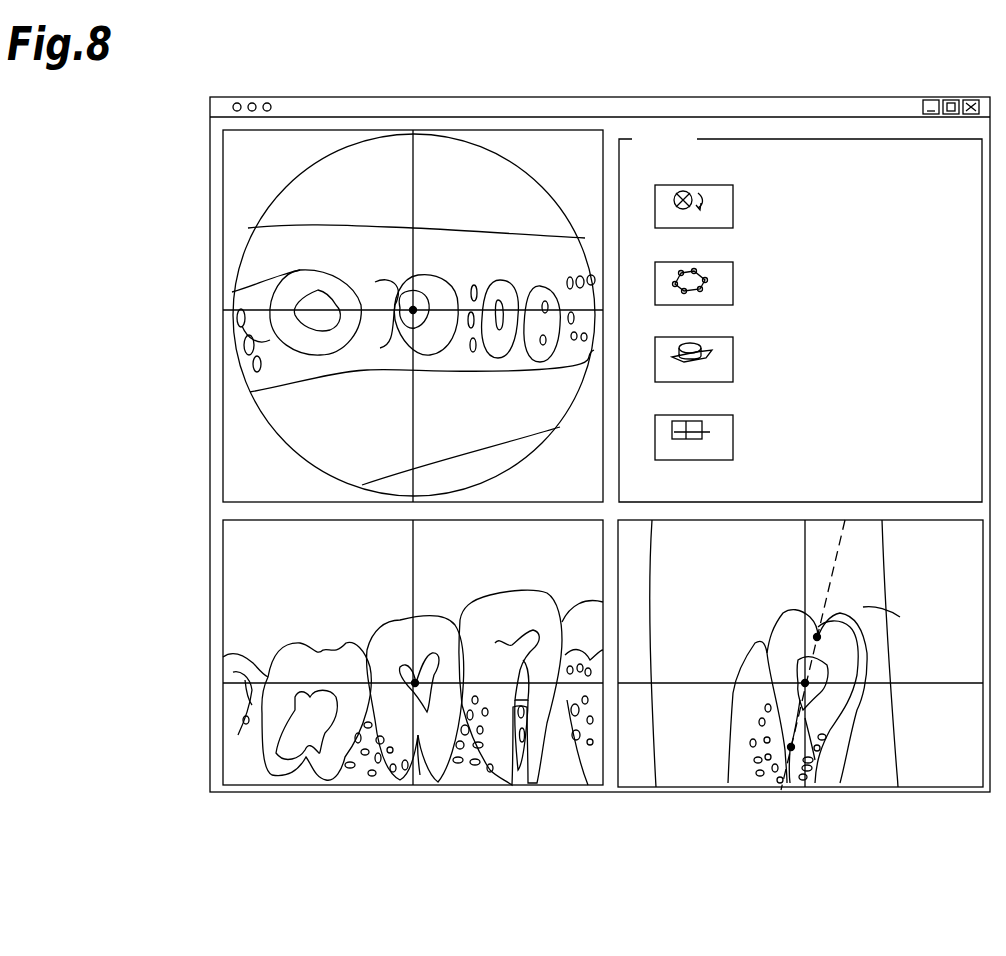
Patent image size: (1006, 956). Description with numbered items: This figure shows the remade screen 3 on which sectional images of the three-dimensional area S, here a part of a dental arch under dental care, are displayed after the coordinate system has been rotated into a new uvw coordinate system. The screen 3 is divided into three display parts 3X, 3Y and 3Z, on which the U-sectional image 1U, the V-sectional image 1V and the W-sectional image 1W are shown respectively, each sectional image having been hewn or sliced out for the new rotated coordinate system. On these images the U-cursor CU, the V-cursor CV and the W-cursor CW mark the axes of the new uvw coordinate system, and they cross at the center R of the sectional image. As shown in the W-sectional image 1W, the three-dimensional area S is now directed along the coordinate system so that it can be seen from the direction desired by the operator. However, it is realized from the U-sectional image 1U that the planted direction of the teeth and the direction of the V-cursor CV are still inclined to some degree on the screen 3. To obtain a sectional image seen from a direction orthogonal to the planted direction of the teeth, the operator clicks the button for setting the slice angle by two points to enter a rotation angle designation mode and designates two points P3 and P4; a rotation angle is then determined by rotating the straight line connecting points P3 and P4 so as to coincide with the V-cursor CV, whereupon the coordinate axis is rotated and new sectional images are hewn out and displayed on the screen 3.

The screen 3 is at (704, 97).
The three-dimensional area S is at (458, 226).
The W-sectional image 1W is at (413, 284).
The display part 3Z is at (517, 148).
The V-sectional image 1V is at (413, 674).
The display part 3Y is at (565, 770).
The U-sectional image 1U is at (799, 678).
The display part 3X is at (640, 775).
The U-cursor CU is at (413, 168).
The V-cursor CV is at (518, 310).
The W-cursor CW is at (290, 646).
The center R is at (413, 312).
The point P3 is at (822, 630).
The point P4 is at (800, 790).